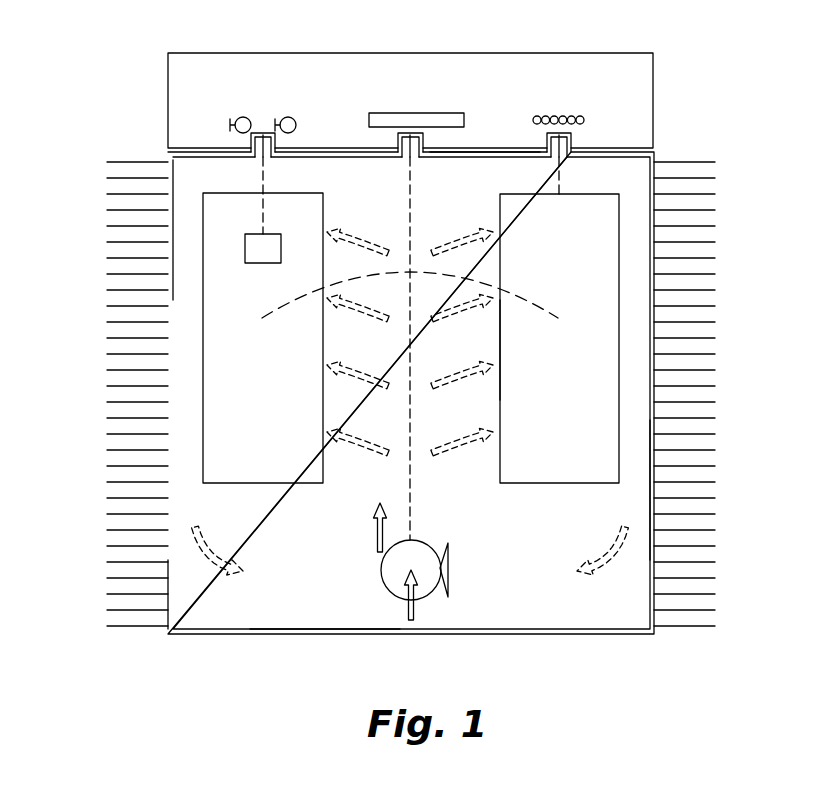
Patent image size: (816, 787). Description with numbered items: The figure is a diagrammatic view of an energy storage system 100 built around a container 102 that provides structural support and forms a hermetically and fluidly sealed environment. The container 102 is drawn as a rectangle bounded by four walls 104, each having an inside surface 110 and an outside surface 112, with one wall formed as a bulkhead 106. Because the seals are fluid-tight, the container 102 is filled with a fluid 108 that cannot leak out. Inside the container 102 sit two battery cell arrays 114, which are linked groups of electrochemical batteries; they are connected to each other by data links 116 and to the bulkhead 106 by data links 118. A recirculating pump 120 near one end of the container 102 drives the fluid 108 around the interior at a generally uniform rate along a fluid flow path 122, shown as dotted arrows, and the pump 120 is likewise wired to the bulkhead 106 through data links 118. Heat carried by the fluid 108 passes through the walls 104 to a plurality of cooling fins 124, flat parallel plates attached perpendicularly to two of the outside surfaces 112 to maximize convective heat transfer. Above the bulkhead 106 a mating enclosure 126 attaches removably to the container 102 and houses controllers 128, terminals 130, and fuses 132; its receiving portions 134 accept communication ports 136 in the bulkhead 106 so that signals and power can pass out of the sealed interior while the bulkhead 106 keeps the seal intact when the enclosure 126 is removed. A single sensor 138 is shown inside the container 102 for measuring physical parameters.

The energy storage system 100 is at (235, 697).
The container 102 is at (432, 639).
The walls 104 is at (224, 155).
The bulkhead 106 is at (513, 152).
The fluid 108 is at (381, 515).
The inside surface 110 is at (177, 633).
The outside surface 112 is at (325, 633).
The battery cell arrays 114 is at (215, 283).
The data links 116 is at (521, 297).
The data links 118 is at (265, 187).
The recirculating pump 120 is at (393, 575).
The fluid flow path 122 is at (354, 430).
The cooling fins 124 is at (117, 193).
The mating enclosure 126 is at (632, 100).
The controllers 128 is at (560, 118).
The terminals 130 is at (289, 117).
The fuses 132 is at (382, 113).
The receiving portions 134 is at (267, 136).
The communication ports 136 is at (264, 135).
The sensor 138 is at (245, 250).